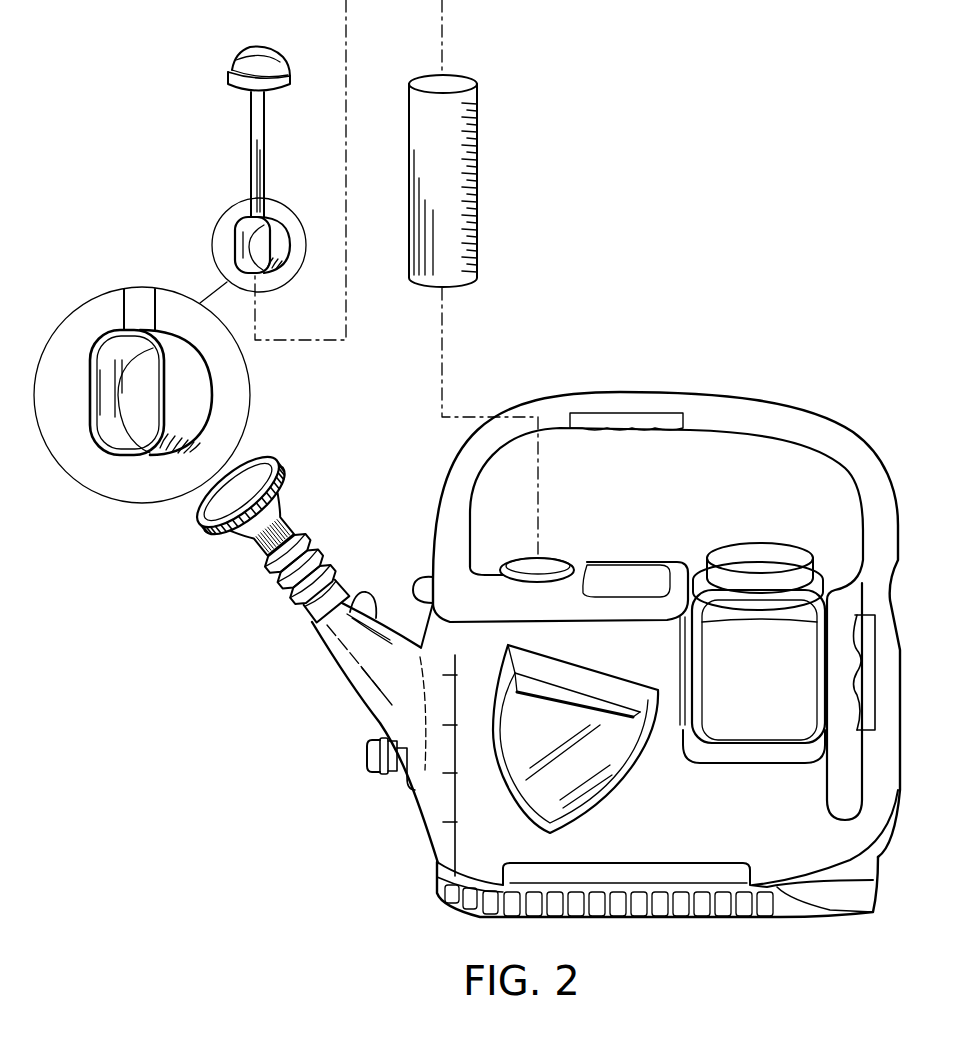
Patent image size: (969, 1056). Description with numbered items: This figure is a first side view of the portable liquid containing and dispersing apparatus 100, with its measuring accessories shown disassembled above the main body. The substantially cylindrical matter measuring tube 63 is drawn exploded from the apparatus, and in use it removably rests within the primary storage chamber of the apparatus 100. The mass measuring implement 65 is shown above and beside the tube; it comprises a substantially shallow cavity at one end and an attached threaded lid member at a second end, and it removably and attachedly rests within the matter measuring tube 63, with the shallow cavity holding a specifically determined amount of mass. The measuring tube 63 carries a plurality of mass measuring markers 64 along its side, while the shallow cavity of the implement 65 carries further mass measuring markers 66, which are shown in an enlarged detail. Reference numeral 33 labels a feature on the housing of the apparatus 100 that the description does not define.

The portable liquid containing and dispersing apparatus 100 is at (772, 272).
The tank with volume indicator 33 is at (455, 838).
The matter measuring tube 63 is at (477, 112).
The mass measuring markers 64 is at (470, 190).
The mass measuring implement 65 is at (251, 128).
The mass measuring markers 66 is at (193, 438).